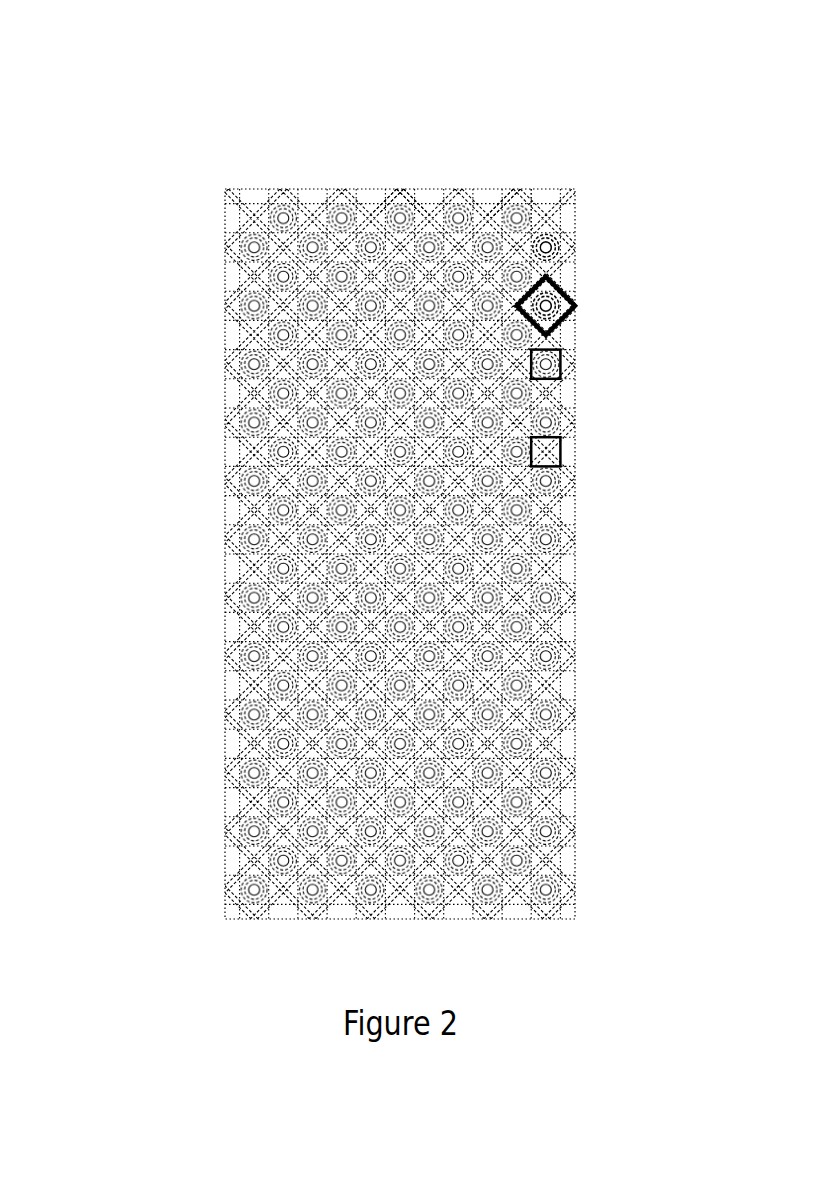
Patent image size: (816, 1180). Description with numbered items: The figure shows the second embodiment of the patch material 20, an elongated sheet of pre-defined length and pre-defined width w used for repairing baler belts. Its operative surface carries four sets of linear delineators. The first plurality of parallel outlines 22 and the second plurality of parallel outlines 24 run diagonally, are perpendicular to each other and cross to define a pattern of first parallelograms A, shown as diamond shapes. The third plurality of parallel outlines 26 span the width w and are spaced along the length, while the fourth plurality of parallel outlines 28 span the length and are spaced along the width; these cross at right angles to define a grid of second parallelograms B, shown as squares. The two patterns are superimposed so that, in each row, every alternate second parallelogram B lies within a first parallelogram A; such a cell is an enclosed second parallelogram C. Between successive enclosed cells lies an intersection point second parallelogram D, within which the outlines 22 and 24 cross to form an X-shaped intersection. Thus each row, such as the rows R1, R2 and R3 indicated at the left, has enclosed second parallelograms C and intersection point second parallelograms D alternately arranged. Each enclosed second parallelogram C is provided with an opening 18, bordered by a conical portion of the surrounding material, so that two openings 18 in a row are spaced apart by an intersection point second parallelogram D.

The opening 18 is at (548, 247).
The patch material 20 is at (268, 126).
The first plurality of parallel delineators 22 is at (408, 198).
The second plurality of parallel delineators 24 is at (382, 200).
The third plurality of parallel delineators 26 is at (487, 203).
The fourth plurality of parallel delineators 28 is at (533, 198).
The row R1 is at (205, 218).
The row R2 is at (205, 248).
The row R3 is at (205, 279).
The first parallelogram A is at (592, 307).
The second parallelogram B is at (573, 302).
The enclosed second parallelogram C is at (567, 365).
The intersection point second parallelogram D is at (562, 452).
The width w is at (555, 940).